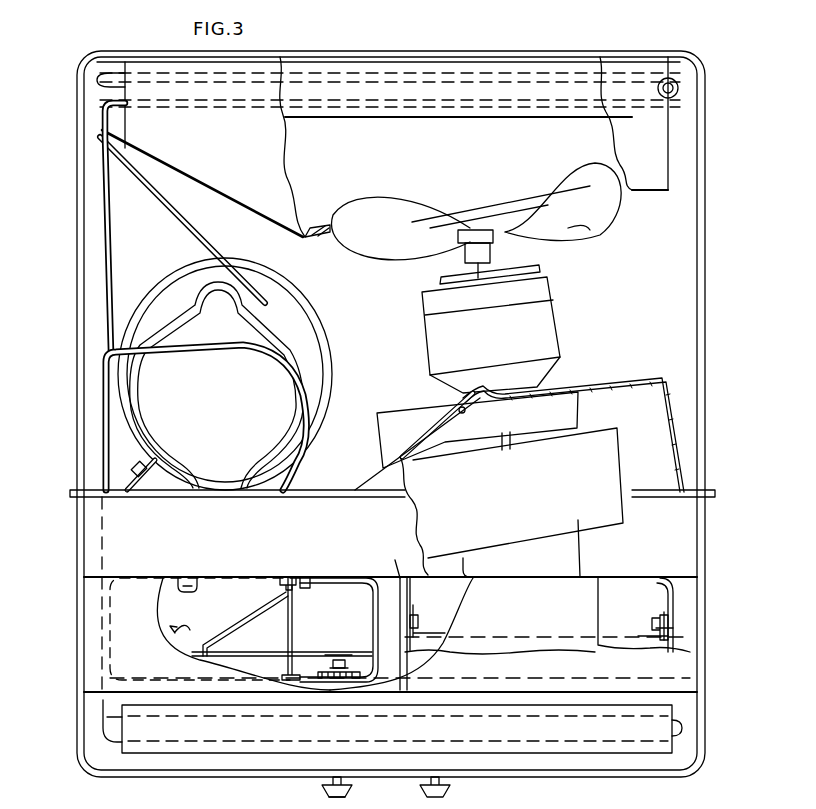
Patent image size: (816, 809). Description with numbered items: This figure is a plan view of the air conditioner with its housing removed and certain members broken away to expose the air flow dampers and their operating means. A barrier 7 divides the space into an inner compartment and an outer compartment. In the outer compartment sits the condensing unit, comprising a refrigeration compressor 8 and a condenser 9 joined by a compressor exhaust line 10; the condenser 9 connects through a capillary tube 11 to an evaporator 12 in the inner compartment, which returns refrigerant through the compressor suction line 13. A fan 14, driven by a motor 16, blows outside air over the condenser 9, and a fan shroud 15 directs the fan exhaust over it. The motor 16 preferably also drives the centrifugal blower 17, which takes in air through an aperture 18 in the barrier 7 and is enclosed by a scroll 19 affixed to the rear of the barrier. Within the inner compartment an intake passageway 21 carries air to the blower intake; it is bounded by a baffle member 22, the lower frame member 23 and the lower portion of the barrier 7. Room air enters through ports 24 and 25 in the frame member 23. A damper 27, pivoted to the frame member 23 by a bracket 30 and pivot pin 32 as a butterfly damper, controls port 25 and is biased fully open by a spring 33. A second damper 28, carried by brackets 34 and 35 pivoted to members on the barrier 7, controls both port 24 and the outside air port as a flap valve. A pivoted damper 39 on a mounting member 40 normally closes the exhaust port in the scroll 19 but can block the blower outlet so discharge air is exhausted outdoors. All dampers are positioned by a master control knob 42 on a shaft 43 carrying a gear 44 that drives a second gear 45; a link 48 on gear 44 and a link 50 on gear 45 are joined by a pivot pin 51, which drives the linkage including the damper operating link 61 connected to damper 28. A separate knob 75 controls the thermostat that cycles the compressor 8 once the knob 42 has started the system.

The barrier 7 is at (95, 552).
The refrigeration compressor 8 is at (288, 357).
The condenser 9 is at (440, 72).
The compressor exhaust line 10 is at (194, 236).
The capillary tube 11 is at (115, 254).
The evaporator 12 is at (682, 722).
The compressor suction line 13 is at (112, 436).
The fan 14 is at (595, 231).
The fan shroud 15 is at (660, 155).
The motor 16 is at (548, 314).
The centrifugal blower 17 is at (586, 448).
The aperture or passageway 18 is at (525, 574).
The housing or scroll 19 is at (649, 378).
The intake passageway 21 is at (160, 643).
The baffle member 22 is at (97, 630).
The lower frame member 23 is at (397, 575).
The room air port 24 is at (204, 615).
The room air port 25 is at (634, 611).
The damper 27 is at (495, 637).
The damper 28 is at (234, 576).
The bracket 30 is at (636, 636).
The pivot pin 32 is at (681, 632).
The spring 33 is at (670, 614).
The bracket 34 is at (306, 583).
The bracket 35 is at (190, 576).
The pivoted damper 39 is at (456, 406).
The mounting member 40 is at (454, 439).
The master control knob 42 is at (323, 793).
The shaft 43 is at (346, 781).
The gear member 44 is at (277, 652).
The second gear 45 is at (402, 674).
The link 48 is at (333, 656).
The link 50 is at (407, 581).
The pivot pin 51 is at (344, 653).
The damper operating link 61 is at (295, 620).
The knob 75 is at (451, 793).